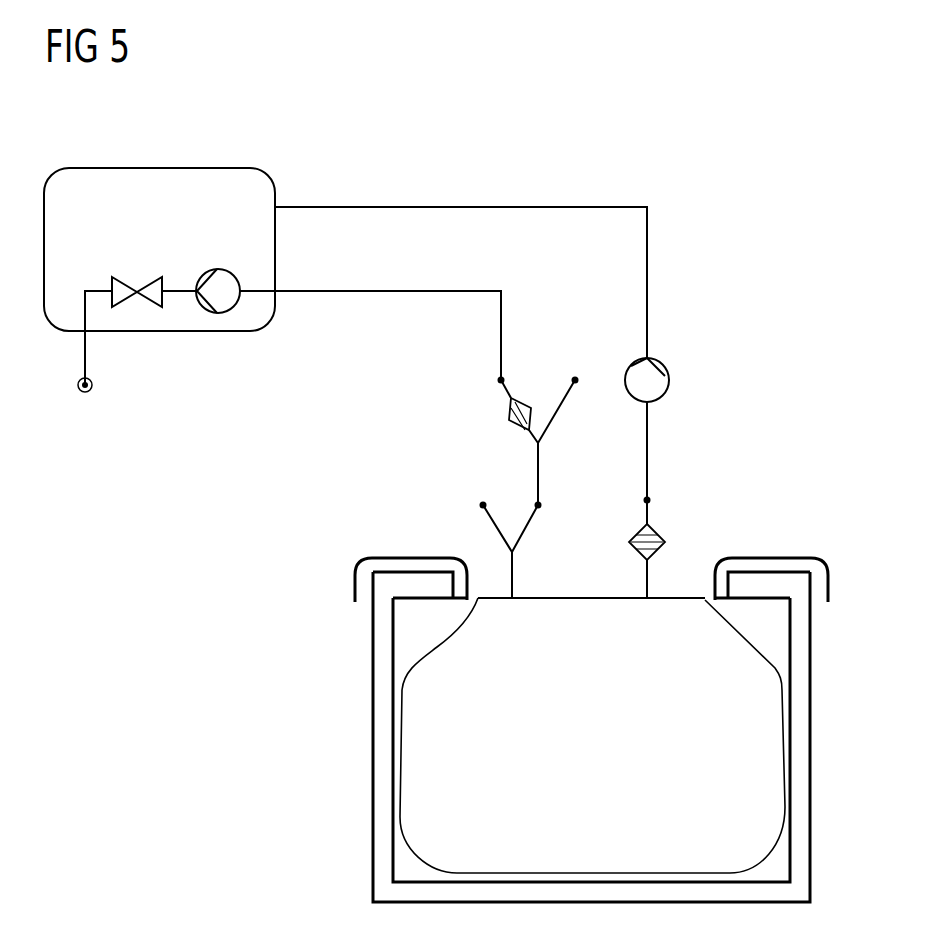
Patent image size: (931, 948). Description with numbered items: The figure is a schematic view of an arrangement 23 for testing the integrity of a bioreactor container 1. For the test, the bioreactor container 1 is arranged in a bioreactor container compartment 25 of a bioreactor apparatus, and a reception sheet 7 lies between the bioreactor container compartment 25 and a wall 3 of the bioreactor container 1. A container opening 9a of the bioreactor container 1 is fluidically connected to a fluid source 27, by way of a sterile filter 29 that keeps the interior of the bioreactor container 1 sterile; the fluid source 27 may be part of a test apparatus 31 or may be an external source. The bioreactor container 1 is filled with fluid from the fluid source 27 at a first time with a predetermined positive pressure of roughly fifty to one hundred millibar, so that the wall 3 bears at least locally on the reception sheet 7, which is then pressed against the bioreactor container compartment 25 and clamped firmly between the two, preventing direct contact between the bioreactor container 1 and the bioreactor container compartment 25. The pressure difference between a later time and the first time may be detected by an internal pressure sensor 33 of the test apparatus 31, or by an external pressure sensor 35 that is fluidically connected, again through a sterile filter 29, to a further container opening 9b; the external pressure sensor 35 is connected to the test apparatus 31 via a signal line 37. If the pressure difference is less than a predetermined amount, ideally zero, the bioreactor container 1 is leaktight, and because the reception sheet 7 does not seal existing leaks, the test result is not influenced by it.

The bioreactor container 1 is at (605, 830).
The wall 3 is at (436, 648).
The reception sheet 7 is at (355, 583).
The container opening 9a is at (514, 591).
The container opening 9b is at (649, 591).
The arrangement 23 is at (663, 148).
The bioreactor container compartment 25 is at (800, 697).
The fluid source 27 is at (93, 388).
The sterile filter 29 is at (498, 411).
The test apparatus 31 is at (157, 168).
The internal pressure sensor 33 is at (217, 268).
The external pressure sensor 35 is at (669, 380).
The signal line 37 is at (567, 206).